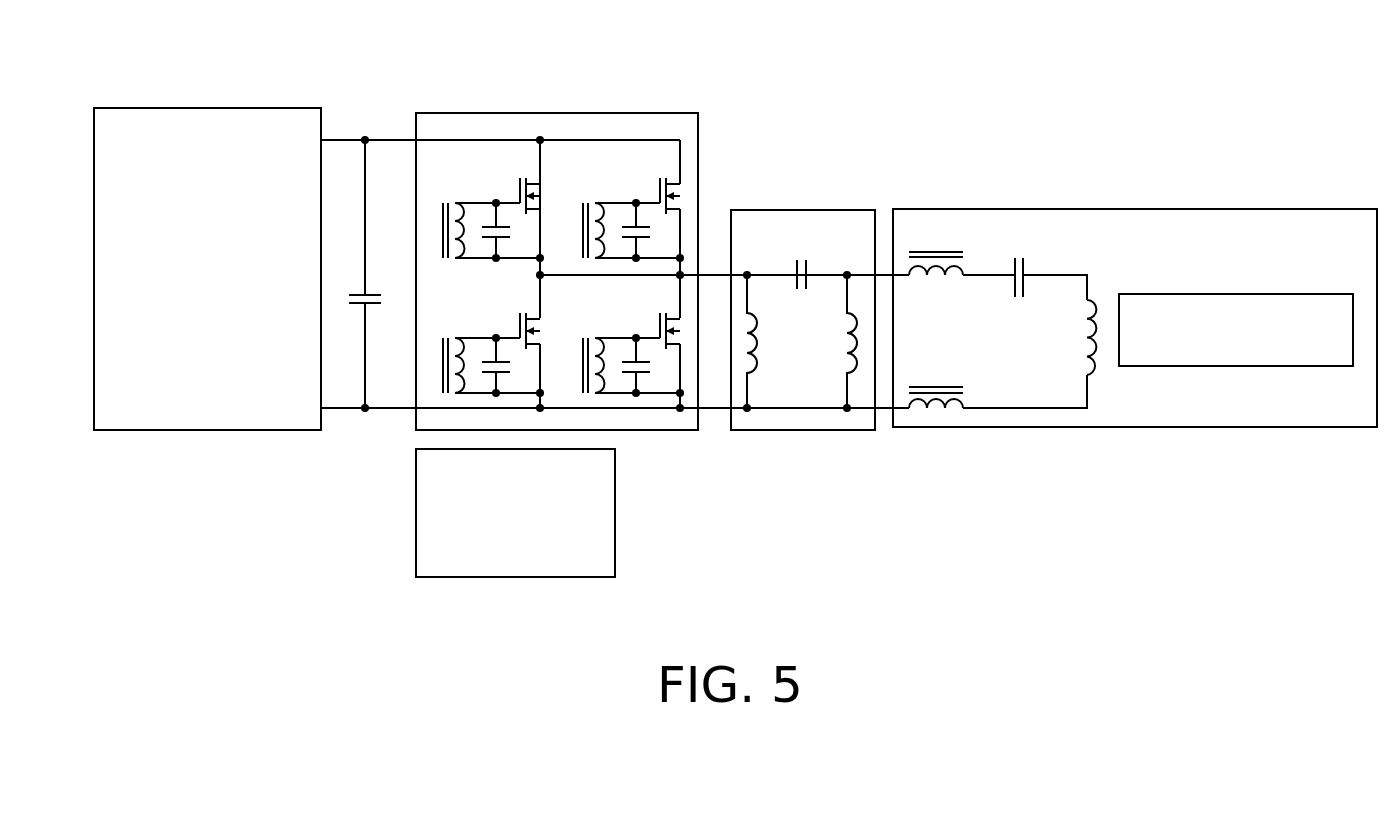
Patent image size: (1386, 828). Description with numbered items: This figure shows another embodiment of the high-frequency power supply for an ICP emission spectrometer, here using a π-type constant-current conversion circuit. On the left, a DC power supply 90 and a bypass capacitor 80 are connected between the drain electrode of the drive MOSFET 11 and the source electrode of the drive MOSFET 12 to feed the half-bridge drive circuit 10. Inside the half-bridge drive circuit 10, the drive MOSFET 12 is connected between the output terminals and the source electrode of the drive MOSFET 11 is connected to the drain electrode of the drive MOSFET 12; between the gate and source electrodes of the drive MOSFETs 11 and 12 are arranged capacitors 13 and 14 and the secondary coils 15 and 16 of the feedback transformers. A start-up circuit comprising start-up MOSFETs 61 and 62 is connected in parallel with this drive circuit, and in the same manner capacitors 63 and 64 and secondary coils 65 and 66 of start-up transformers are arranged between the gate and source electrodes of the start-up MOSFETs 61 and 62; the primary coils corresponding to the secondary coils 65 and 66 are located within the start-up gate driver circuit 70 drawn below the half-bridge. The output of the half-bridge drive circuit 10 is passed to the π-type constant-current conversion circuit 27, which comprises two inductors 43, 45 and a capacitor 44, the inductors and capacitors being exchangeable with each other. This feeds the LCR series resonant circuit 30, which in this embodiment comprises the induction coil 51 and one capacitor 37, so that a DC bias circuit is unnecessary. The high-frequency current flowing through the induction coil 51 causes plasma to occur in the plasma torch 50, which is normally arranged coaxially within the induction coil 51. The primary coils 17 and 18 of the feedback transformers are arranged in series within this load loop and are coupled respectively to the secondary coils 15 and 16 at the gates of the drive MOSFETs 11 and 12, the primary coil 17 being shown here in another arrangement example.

The DC power supply 90 is at (229, 107).
The bypass capacitor 80 is at (366, 291).
The half-bridge drive circuit 10 is at (572, 112).
The drive MOSFET 11 is at (659, 193).
The drive MOSFET 12 is at (659, 328).
The capacitor 13 is at (632, 224).
The capacitor 14 is at (632, 359).
The secondary coil of feedback transformer 15 is at (597, 205).
The secondary coil of feedback transformer 16 is at (597, 340).
The start-up MOSFET 61 is at (519, 193).
The start-up MOSFET 62 is at (519, 328).
The capacitor 63 is at (492, 224).
The capacitor 64 is at (492, 359).
The secondary coil of start-up transformer 65 is at (457, 205).
The secondary coil of start-up transformer 66 is at (457, 340).
The start-up gate driver circuit 70 is at (616, 510).
The π-type constant-current conversion circuit 27 is at (815, 209).
The inductor 43 is at (756, 326).
The capacitor 44 is at (808, 268).
The inductor 45 is at (845, 350).
The LCR series resonant circuit 30 is at (1022, 208).
The primary coil of feedback transformer 17 is at (928, 278).
The primary coil of feedback transformer 18 is at (940, 387).
The capacitor 37 is at (1013, 265).
The induction coil 51 is at (1083, 357).
The plasma torch 50 is at (1227, 293).